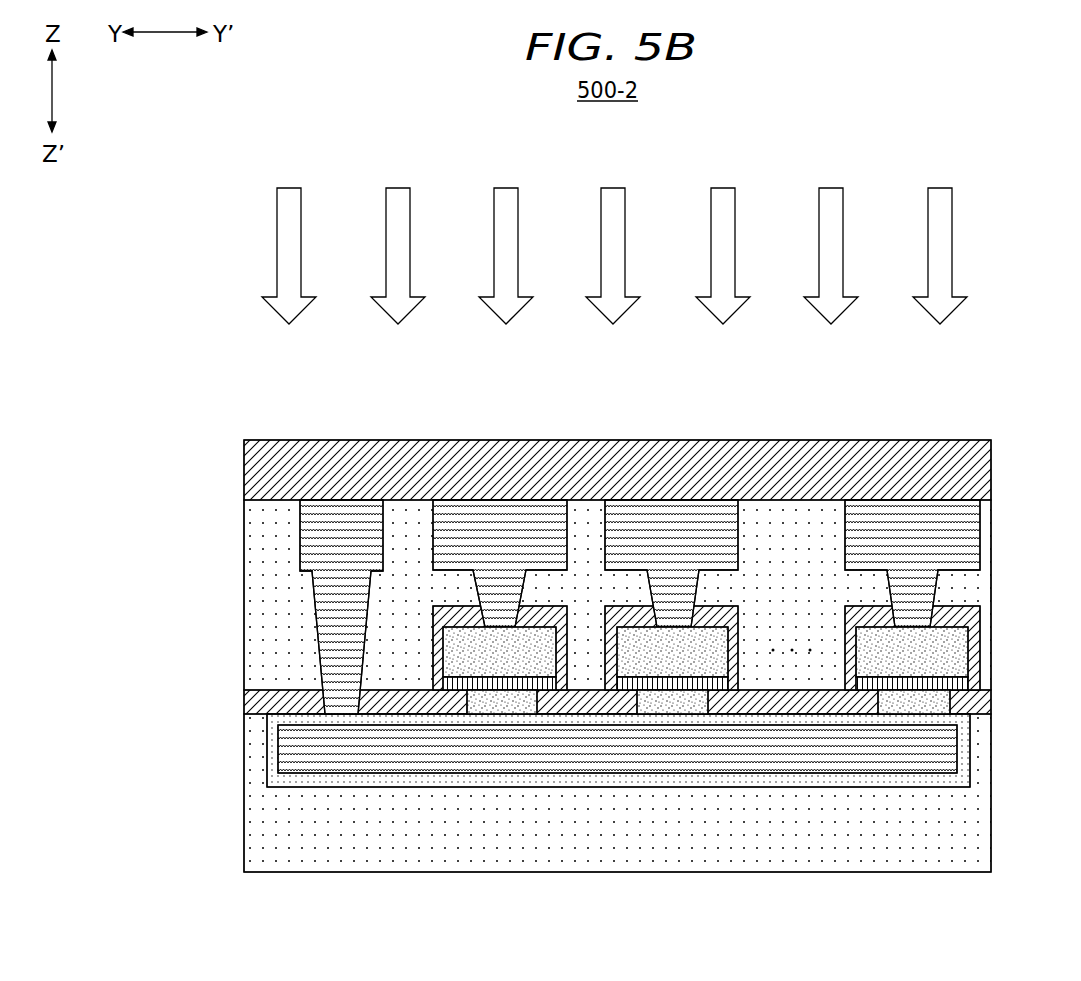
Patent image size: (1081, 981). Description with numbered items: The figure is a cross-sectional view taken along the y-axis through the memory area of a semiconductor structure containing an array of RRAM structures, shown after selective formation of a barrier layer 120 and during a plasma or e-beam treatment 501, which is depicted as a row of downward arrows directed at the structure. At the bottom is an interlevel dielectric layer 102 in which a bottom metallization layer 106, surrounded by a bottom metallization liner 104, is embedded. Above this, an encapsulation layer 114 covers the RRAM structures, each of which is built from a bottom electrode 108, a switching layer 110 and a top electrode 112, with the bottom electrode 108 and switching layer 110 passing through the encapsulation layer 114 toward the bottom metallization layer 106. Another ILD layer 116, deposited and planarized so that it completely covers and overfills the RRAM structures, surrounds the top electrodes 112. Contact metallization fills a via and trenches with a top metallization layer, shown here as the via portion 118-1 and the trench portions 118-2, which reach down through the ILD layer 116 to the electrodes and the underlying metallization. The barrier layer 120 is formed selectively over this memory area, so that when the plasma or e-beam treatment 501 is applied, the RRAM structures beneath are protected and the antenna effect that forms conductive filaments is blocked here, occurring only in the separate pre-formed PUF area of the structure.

The plasma or e-beam treatment 501 is at (210, 183).
The interlevel dielectric layer 102 is at (866, 872).
The bottom metallization liner 104 is at (268, 748).
The bottom metallization layer 106 is at (340, 765).
The bottom electrode 108 is at (670, 697).
The switching layer 110 is at (497, 697).
The top electrode 112 is at (953, 652).
The encapsulation layer 114 is at (991, 705).
The ILD layer 116 is at (244, 595).
The top metallization layer in via 118-1 is at (343, 505).
The top metallization layer in trenches 118-2 is at (873, 499).
The barrier layer 120 is at (992, 470).